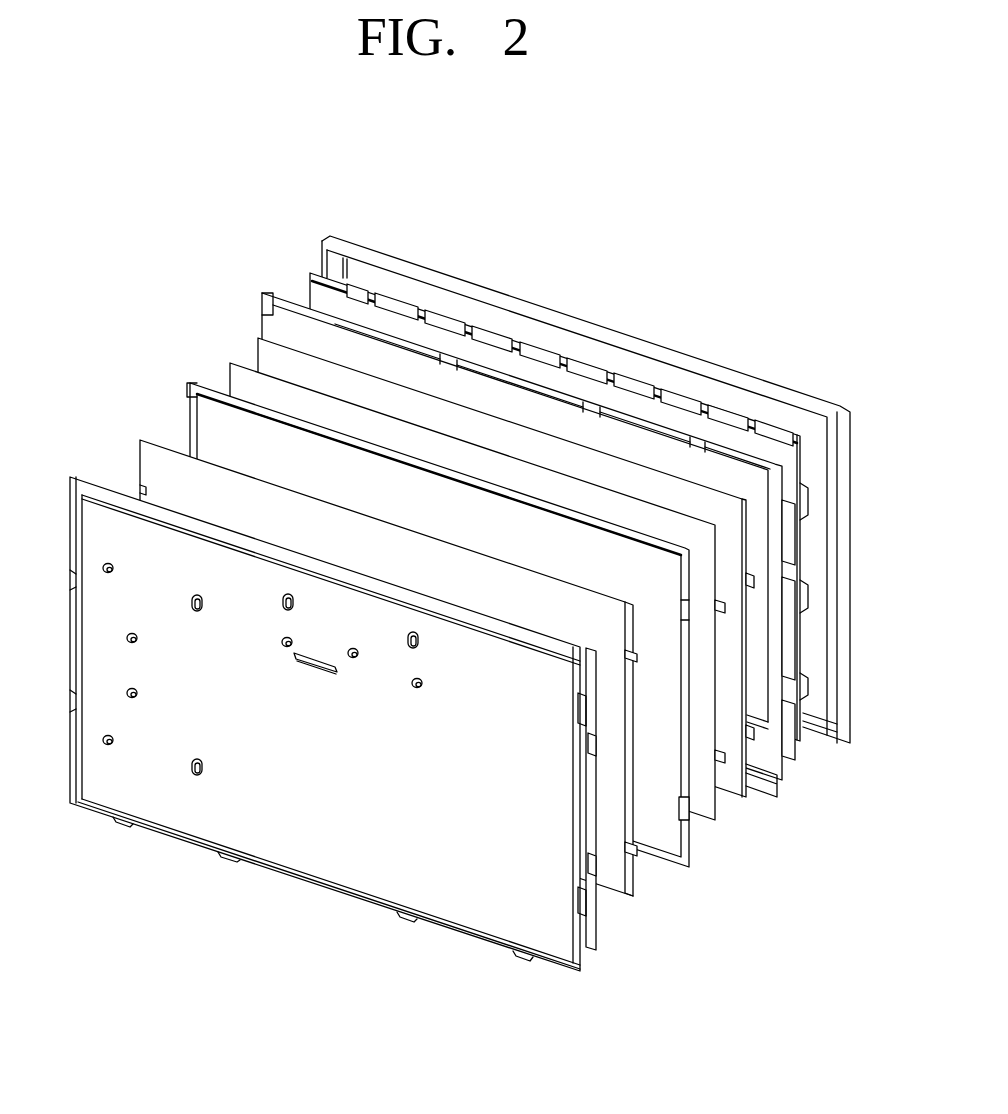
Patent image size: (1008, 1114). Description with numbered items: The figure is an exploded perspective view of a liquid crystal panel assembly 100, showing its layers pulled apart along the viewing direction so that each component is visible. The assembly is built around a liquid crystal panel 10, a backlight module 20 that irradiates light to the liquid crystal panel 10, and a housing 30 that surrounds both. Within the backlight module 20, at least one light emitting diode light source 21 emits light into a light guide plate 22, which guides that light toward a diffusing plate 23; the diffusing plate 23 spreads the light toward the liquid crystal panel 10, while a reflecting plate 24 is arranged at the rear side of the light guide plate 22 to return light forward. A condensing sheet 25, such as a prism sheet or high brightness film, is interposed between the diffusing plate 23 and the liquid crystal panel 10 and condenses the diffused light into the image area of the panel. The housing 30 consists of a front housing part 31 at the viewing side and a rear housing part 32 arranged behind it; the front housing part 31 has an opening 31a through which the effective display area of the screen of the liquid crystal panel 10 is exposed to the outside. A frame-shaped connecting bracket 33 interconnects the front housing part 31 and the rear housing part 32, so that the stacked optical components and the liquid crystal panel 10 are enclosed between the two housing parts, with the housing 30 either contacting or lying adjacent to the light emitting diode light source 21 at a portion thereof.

The liquid crystal panel assembly 100 is at (526, 204).
The liquid crystal panel 10 is at (652, 410).
The backlight module 20 is at (491, 646).
The light emitting diode (LED) light source 21 is at (670, 863).
The light guide plate 22 is at (679, 833).
The diffusing plate 23 is at (712, 805).
The reflecting plate 24 is at (427, 695).
The condensing sheet 25 is at (740, 748).
The housing 30 is at (140, 280).
The front housing part 31 is at (322, 240).
The opening 31a is at (568, 348).
The rear housing part 32 is at (72, 476).
The connecting bracket 33 is at (261, 294).